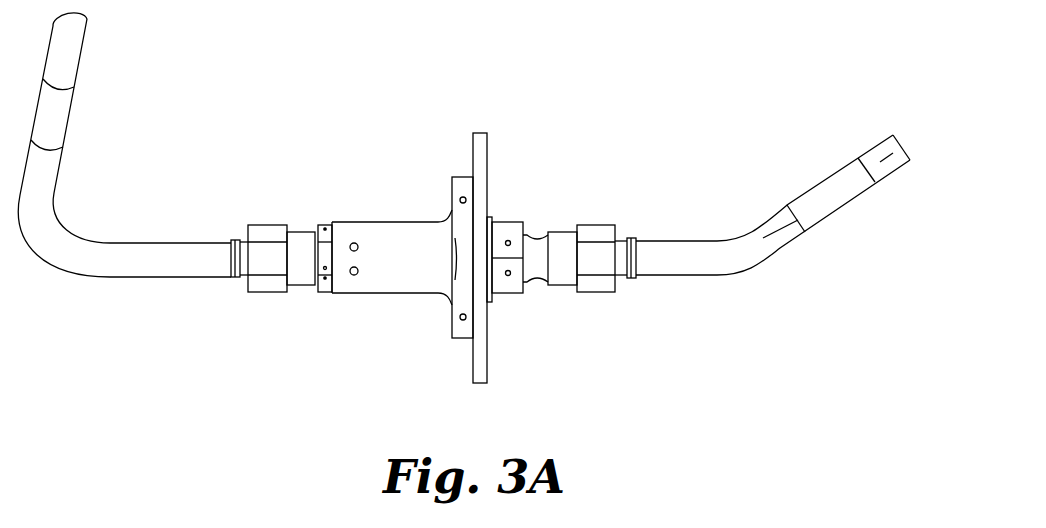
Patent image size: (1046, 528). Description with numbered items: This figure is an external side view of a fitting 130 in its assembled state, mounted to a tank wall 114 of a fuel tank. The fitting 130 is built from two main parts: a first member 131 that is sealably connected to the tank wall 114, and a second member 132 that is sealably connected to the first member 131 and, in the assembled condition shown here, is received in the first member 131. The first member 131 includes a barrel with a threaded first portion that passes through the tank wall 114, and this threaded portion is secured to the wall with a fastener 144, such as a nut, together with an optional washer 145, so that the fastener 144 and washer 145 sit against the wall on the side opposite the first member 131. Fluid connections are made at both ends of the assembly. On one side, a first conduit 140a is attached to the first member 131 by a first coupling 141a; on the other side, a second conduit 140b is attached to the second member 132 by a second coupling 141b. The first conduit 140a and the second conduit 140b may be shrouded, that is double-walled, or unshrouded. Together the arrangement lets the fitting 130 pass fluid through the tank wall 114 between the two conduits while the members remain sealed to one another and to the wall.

The fitting 130 is at (438, 116).
The second conduit 140b is at (80, 60).
The second coupling 141b is at (270, 225).
The second member 132 is at (318, 295).
The first member 131 is at (381, 294).
The tank wall 114 is at (487, 360).
The washer 145 is at (498, 217).
The fastener 144 is at (517, 221).
The first coupling 141a is at (590, 294).
The first conduit 140a is at (780, 248).